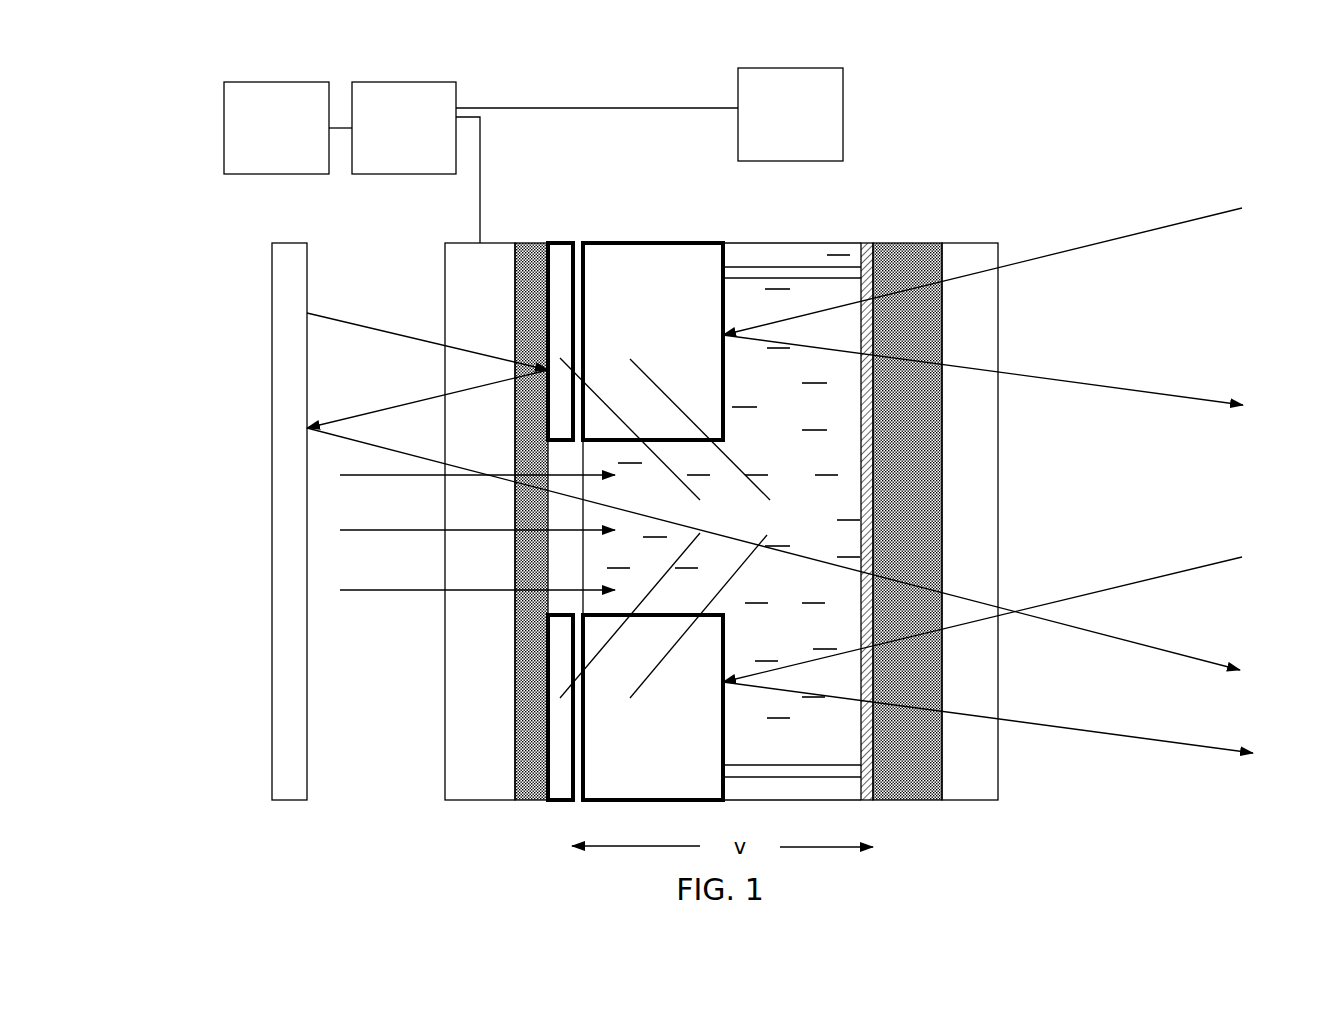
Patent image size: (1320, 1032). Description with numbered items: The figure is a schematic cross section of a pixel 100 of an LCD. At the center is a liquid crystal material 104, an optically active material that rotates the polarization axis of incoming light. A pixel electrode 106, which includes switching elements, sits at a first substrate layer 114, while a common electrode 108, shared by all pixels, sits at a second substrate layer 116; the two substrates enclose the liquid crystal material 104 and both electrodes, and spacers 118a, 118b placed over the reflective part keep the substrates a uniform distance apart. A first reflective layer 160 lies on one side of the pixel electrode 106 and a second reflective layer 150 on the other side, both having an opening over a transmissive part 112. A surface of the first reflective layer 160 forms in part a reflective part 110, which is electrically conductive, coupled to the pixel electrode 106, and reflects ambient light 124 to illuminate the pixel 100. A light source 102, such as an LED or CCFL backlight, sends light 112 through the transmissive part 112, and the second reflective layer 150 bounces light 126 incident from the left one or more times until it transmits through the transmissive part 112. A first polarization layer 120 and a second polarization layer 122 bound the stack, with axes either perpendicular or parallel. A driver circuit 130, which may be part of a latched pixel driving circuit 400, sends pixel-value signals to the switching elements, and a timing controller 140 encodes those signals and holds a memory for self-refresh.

The pixel 100 is at (432, 848).
The light source 102 is at (288, 802).
The liquid crystal material 104 is at (803, 253).
The pixel electrode 106 is at (578, 802).
The common electrode 108 is at (870, 800).
The reflective part 110 is at (723, 652).
The transmissive part 112 is at (499, 532).
The first substrate layer 114 is at (537, 243).
The second substrate layer 116 is at (897, 243).
The spacer 118a is at (802, 270).
The spacer 118b is at (780, 772).
The first polarization layer 120 is at (448, 273).
The second polarization layer 122 is at (967, 242).
The ambient light 124 is at (1098, 245).
The light 126 is at (1047, 620).
The driver circuit 130 is at (457, 92).
The timing controller 140 is at (248, 174).
The second reflective layer 150 is at (644, 528).
The first reflective layer 160 is at (708, 528).
The latched pixel driving circuit 400 is at (843, 120).